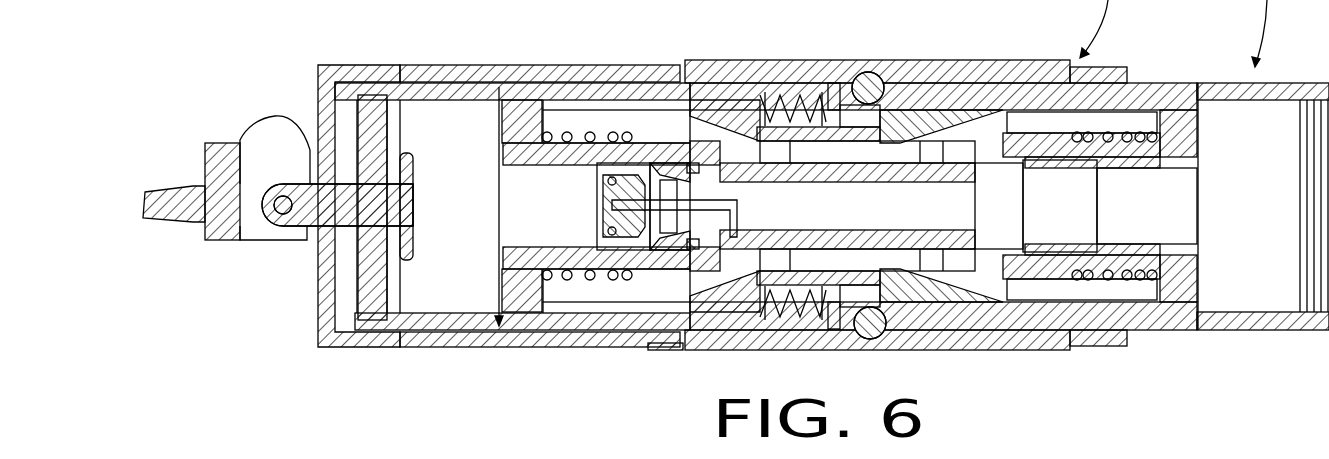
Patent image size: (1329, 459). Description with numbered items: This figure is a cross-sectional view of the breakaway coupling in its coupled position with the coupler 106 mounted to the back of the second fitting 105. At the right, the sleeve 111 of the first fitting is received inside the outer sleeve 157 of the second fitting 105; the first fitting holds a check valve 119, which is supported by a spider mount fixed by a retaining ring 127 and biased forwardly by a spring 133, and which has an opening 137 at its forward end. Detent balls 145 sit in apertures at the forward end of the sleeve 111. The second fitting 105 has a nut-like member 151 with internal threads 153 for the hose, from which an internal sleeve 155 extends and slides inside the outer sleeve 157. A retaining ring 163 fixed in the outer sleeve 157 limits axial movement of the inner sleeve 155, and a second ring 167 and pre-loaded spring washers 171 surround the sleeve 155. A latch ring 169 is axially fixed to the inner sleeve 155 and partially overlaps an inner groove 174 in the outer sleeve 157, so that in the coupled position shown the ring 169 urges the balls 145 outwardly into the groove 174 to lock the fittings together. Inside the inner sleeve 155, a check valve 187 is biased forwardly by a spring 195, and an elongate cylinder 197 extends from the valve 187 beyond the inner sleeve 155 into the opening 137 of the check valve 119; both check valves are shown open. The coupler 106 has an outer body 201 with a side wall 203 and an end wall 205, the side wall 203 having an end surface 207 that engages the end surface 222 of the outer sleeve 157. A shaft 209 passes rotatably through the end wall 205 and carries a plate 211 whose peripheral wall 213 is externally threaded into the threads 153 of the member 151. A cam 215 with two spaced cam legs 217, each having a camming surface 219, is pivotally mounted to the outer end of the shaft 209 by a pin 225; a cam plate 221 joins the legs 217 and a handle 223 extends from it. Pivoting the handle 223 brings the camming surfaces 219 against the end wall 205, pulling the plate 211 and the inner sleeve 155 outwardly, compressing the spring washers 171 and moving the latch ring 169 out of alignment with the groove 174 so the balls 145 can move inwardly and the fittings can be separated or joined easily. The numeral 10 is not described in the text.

The tool body 10 is at (1307, 85).
The second fitting 105 is at (752, 60).
The coupler 106 is at (507, 57).
The sleeve 111 is at (1141, 70).
The check valve 119 is at (1038, 285).
The retaining ring 127 is at (1203, 285).
The spring 133 is at (1130, 280).
The opening 137 is at (1010, 245).
The detent ball 145 is at (915, 90).
The nut-like member 151 is at (442, 348).
The internal threads 153 is at (370, 93).
The internal sleeve 155 is at (657, 63).
The outer sleeve 157 is at (1024, 60).
The retaining ring 163 is at (735, 63).
The second ring 167 is at (835, 72).
The latch ring 169 is at (853, 66).
The spring washers 171 is at (772, 92).
The inner groove 174 is at (975, 64).
The check valve 187 is at (636, 290).
The spring 195 is at (567, 282).
The elongate cylinder 197 is at (688, 348).
The outer body 201 is at (478, 64).
The side wall 203 is at (388, 65).
The end wall 205 is at (318, 78).
The end surface 207 is at (652, 347).
The shaft 209 is at (338, 265).
The plate 211 is at (350, 222).
The peripheral wall 213 is at (353, 83).
The cam 215 is at (240, 250).
The cam legs 217 is at (255, 147).
The camming surface 219 is at (297, 133).
The cam plate 221 is at (225, 240).
The end surface 222 is at (645, 340).
The handle 223 is at (173, 203).
The pin 225 is at (278, 212).